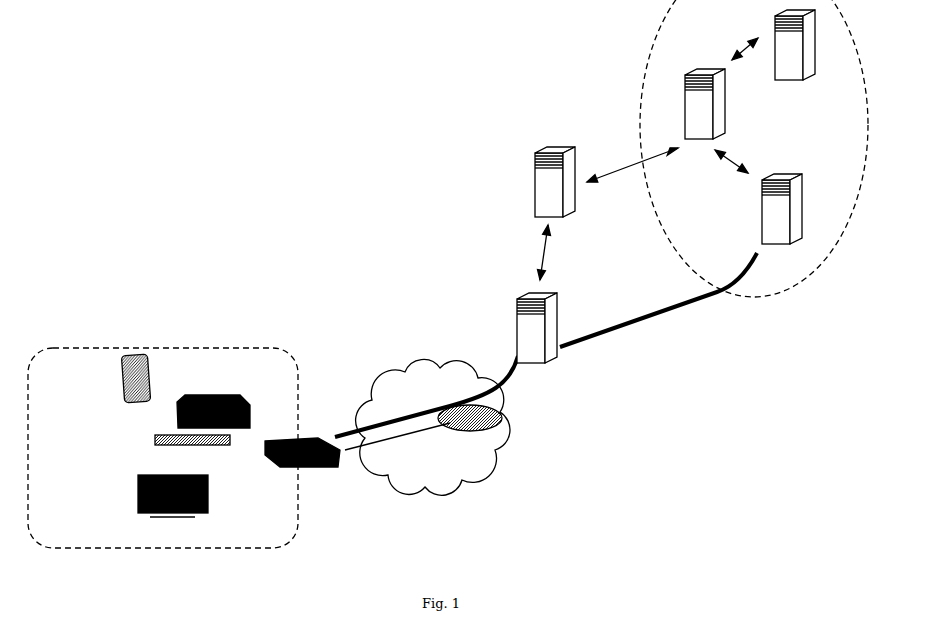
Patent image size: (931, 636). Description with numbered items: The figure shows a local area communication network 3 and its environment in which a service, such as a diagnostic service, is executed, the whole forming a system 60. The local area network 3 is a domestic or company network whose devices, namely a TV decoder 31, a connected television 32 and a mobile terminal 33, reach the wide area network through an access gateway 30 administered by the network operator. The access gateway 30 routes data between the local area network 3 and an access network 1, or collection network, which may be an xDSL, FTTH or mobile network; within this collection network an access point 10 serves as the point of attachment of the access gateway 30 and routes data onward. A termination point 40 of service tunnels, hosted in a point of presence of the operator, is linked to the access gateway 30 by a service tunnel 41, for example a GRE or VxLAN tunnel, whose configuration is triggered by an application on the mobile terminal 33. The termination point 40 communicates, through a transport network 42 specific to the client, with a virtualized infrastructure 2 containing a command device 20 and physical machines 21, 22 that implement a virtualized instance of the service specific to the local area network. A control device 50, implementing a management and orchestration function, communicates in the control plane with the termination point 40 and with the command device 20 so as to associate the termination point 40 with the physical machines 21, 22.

The access network 1 is at (475, 478).
The virtualized infrastructure 2 is at (640, 100).
The local area communication network 3 is at (148, 552).
The access point 10 is at (463, 435).
The command device 20 is at (685, 127).
The physical machine 21 is at (763, 201).
The physical machine 22 is at (776, 55).
The access gateway 30 is at (265, 458).
The TV decoder 31 is at (177, 408).
The connected television 32 is at (138, 505).
The mobile terminal 33 is at (123, 388).
The termination point 40 is at (518, 327).
The service tunnel 41 is at (502, 387).
The transport network 42 is at (668, 312).
The control device 50 is at (536, 181).
The system 60 is at (422, 285).